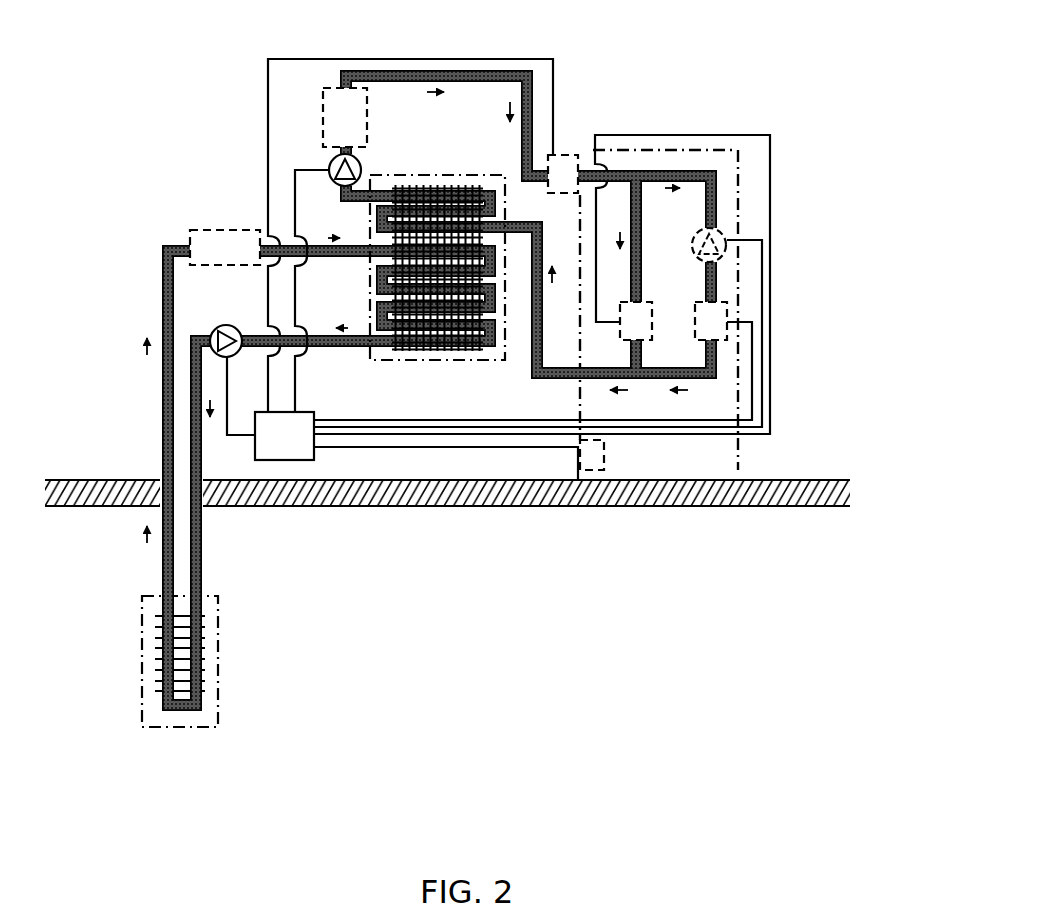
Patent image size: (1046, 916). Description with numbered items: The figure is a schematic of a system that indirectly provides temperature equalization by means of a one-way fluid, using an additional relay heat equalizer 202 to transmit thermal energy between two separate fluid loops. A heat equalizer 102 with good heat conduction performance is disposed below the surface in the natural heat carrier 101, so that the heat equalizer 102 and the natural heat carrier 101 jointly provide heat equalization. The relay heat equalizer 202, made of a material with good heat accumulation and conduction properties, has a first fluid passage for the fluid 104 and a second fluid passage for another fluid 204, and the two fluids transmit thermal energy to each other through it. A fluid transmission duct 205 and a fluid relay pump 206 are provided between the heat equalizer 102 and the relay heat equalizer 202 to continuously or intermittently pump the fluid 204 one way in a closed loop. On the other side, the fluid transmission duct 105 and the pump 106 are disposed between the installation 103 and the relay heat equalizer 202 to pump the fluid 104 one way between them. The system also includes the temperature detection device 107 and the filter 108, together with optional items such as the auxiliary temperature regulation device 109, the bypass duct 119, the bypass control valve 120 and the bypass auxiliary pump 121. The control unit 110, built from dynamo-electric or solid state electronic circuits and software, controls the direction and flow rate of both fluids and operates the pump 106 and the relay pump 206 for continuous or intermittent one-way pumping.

The natural heat carrier 101 is at (395, 510).
The heat equalizer 102 is at (205, 728).
The installation 103 is at (612, 149).
The fluid 104 is at (387, 72).
The fluid transmission duct 105 is at (477, 70).
The pump 106 is at (358, 160).
The temperature detection device 107 is at (604, 462).
The filter 108 is at (325, 137).
The auxiliary temperature regulation device 109 is at (562, 155).
The control unit 110 is at (300, 412).
The bypass duct 119 is at (717, 195).
The bypass control valve 120 is at (652, 308).
The bypass auxiliary pump 121 is at (717, 232).
The relay heat equalizer 202 is at (430, 176).
The fluid 204 is at (165, 292).
The fluid transmission duct 205 is at (163, 442).
The fluid relay pump 206 is at (228, 324).